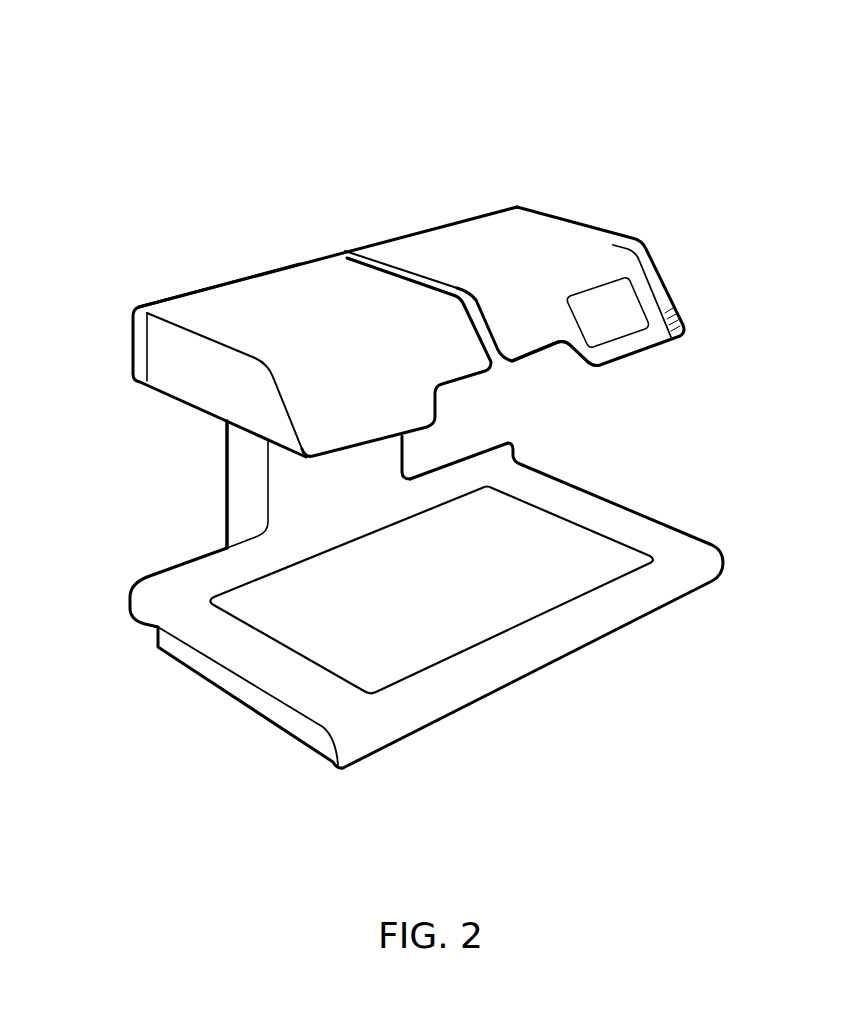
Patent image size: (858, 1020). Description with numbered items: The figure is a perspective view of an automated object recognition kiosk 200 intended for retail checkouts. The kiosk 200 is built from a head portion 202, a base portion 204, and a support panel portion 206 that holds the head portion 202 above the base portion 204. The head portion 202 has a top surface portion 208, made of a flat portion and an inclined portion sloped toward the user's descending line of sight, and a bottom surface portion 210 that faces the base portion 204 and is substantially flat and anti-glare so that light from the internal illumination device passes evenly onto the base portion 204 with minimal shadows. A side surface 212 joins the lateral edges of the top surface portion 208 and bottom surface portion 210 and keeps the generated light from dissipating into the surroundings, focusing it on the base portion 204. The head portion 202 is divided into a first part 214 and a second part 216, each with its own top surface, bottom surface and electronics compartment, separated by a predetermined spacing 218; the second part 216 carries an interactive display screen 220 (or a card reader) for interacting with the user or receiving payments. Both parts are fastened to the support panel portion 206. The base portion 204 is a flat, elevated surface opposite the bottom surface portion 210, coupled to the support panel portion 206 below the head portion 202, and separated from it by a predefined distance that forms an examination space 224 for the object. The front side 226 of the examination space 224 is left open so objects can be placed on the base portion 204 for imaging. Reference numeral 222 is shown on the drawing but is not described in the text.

The automated object recognition kiosk 200 is at (433, 74).
The head portion 202 is at (288, 146).
The base portion 204 is at (693, 537).
The support panel portion 206 is at (227, 487).
The top surface portion 208 is at (463, 181).
The bottom surface portion 210 is at (529, 383).
The side surface 212 is at (195, 377).
The first part 214 is at (247, 277).
The second part 216 is at (450, 222).
The predetermined spacing 218 is at (342, 246).
The interactive display screen 220 is at (587, 313).
The rim 222 is at (648, 283).
The examination space 224 is at (616, 450).
The front side 226 is at (745, 645).